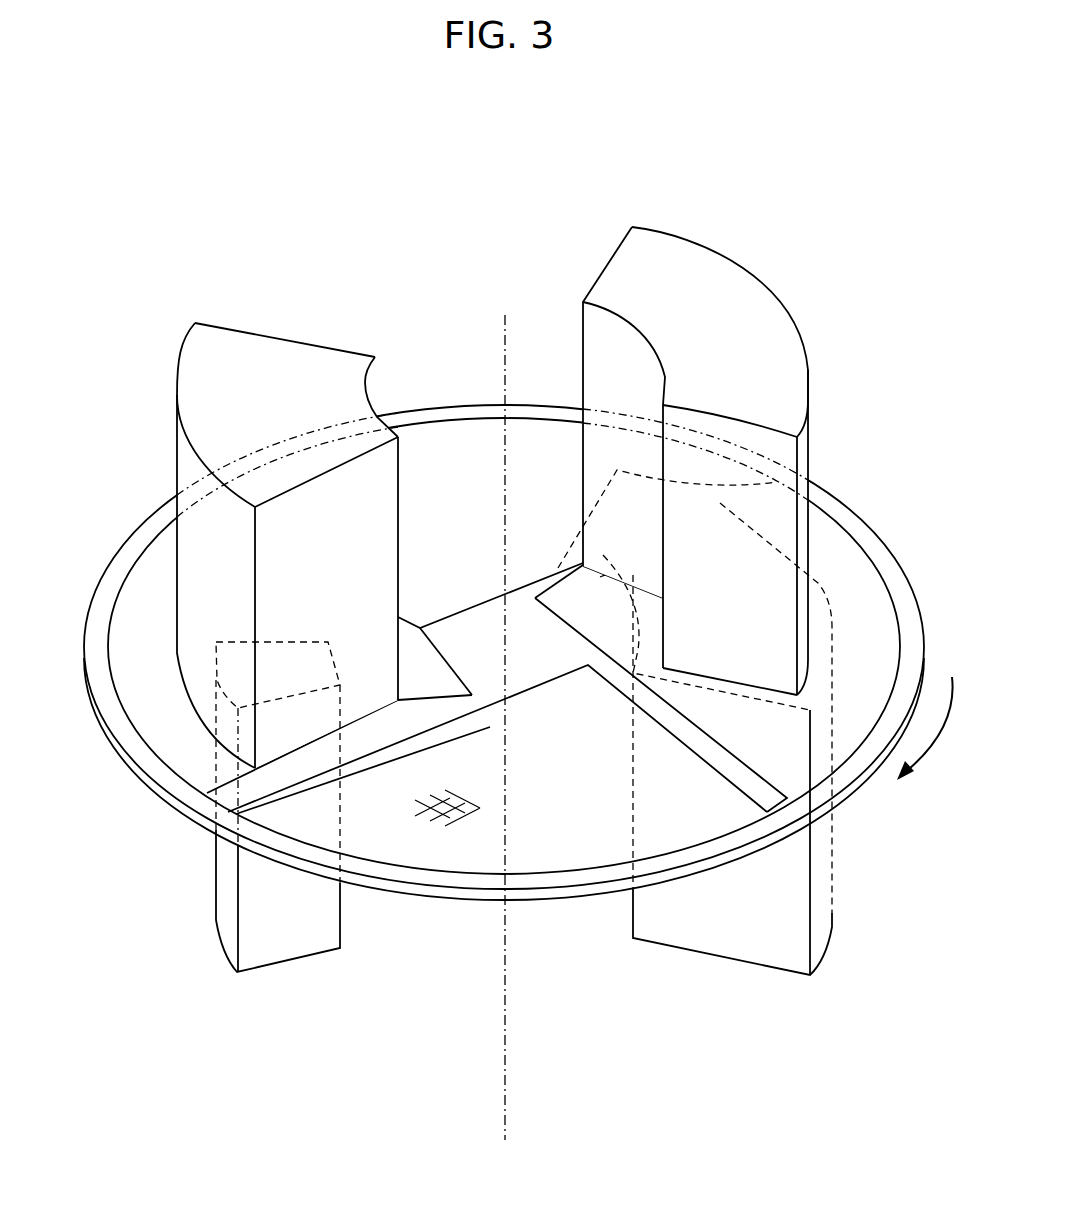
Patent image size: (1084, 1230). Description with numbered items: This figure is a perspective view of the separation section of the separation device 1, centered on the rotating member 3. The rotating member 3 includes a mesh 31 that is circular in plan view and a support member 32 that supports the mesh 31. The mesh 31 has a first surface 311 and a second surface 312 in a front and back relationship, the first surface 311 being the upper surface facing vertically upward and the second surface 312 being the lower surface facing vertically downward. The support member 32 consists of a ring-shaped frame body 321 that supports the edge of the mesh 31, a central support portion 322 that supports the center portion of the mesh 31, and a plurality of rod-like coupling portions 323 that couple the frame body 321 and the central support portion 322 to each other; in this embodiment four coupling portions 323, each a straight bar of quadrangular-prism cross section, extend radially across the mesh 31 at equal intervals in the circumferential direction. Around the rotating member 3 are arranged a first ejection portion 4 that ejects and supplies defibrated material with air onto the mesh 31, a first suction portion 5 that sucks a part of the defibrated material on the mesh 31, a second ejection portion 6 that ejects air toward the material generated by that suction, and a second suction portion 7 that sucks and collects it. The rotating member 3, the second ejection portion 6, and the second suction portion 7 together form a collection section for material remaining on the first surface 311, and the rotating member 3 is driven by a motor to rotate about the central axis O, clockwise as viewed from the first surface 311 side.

The separation device 1 is at (746, 127).
The rotating member 3 is at (483, 673).
The mesh 31 is at (483, 652).
The first surface 311 is at (148, 603).
The second surface 312 is at (165, 722).
The support member 32 is at (465, 758).
The frame body 321 is at (568, 880).
The central support portion 322 is at (470, 640).
The coupling portion 323 is at (365, 583).
The first ejection portion 4 is at (767, 289).
The first suction portion 5 is at (835, 937).
The second ejection portion 6 is at (214, 939).
The second suction portion 7 is at (233, 328).